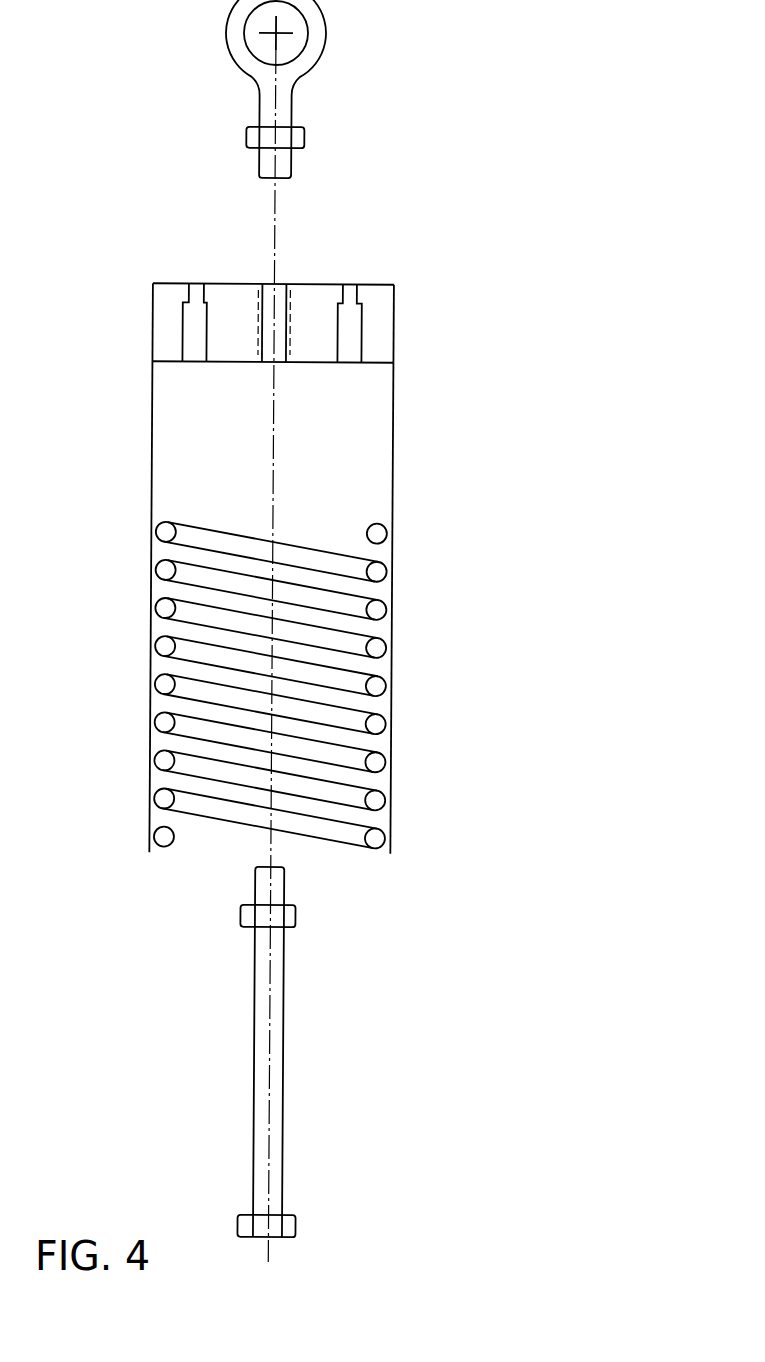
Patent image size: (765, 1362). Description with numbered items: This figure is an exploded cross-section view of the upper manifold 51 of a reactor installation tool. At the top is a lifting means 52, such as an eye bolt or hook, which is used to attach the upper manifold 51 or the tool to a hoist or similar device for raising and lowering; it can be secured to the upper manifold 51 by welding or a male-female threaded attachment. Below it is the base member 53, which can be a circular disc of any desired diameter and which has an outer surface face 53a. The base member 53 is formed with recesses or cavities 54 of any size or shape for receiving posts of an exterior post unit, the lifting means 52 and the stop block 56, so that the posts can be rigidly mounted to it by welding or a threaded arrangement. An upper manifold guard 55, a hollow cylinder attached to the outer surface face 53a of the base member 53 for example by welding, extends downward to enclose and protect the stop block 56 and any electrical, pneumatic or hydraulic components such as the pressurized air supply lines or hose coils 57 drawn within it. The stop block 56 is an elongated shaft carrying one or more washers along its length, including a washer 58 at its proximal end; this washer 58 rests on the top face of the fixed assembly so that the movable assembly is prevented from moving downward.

The upper manifold 51 is at (494, 263).
The lifting means 52 is at (310, 62).
The base member 53 is at (389, 331).
The outer surface face 53a is at (396, 350).
The recesses or cavities 54 is at (360, 315).
The upper manifold guard 55 is at (192, 313).
The stop block 56 is at (284, 1068).
The hose coils 57 is at (382, 609).
The washer 58 is at (302, 918).